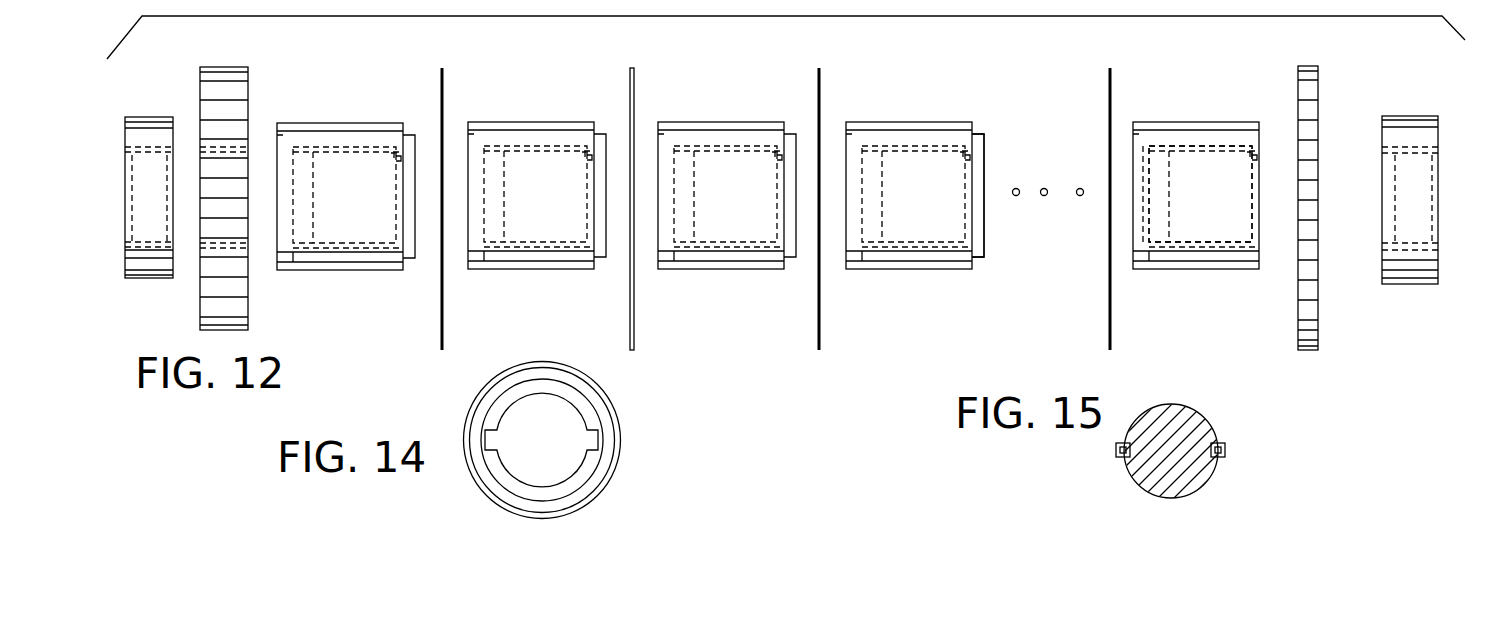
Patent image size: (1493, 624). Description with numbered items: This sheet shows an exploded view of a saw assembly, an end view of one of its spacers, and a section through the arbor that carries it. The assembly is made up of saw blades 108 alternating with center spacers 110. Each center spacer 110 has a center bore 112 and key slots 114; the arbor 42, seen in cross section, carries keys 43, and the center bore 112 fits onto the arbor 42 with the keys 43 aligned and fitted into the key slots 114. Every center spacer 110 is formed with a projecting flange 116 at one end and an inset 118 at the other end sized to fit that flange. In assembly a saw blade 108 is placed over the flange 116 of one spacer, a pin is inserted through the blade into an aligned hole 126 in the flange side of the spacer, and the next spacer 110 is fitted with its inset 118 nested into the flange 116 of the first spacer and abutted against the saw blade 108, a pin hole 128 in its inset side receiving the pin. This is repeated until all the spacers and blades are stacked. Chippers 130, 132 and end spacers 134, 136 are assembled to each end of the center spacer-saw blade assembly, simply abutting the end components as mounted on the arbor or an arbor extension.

In FIG. 15, the arbor 42 is at (1188, 430).
In FIG. 15, the keys 43 is at (1115, 458).
In FIG. 12, the saw blades 108 is at (440, 120).
In FIG. 12, the center spacers 110 is at (334, 133).
In FIG. 12, the center bore 112 is at (1203, 158).
In FIG. 12, the key slots 114 is at (1223, 148).
In FIG. 12, the projecting flange 116 is at (982, 137).
In FIG. 12, the inset 118 is at (842, 140).
In FIG. 12, the hole 126 is at (597, 153).
In FIG. 12, the pin hole 128 is at (657, 156).
In FIG. 12, the chipper 130 is at (228, 84).
In FIG. 12, the chipper 132 is at (1307, 66).
In FIG. 12, the end spacer 134 is at (148, 124).
In FIG. 12, the end spacer 136 is at (1405, 117).